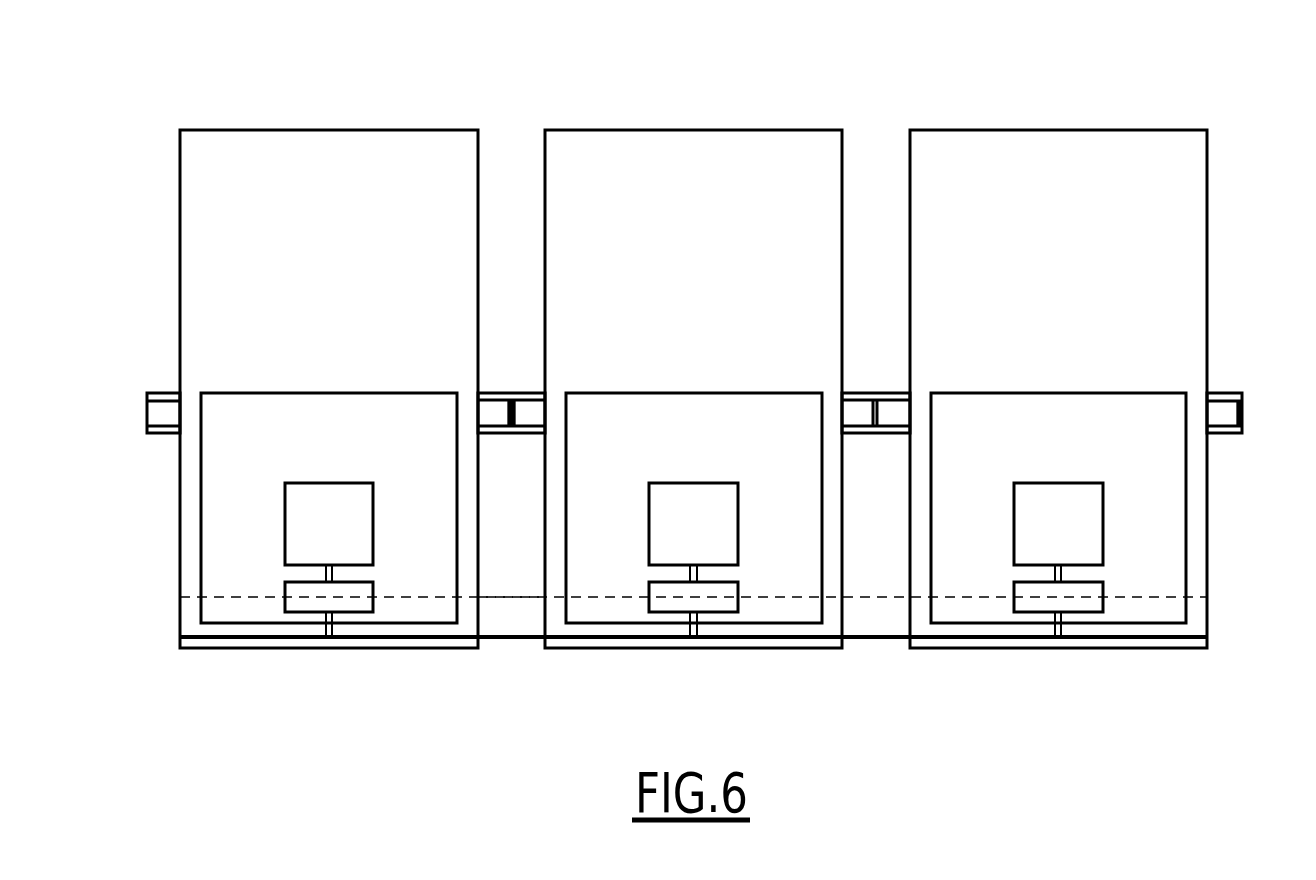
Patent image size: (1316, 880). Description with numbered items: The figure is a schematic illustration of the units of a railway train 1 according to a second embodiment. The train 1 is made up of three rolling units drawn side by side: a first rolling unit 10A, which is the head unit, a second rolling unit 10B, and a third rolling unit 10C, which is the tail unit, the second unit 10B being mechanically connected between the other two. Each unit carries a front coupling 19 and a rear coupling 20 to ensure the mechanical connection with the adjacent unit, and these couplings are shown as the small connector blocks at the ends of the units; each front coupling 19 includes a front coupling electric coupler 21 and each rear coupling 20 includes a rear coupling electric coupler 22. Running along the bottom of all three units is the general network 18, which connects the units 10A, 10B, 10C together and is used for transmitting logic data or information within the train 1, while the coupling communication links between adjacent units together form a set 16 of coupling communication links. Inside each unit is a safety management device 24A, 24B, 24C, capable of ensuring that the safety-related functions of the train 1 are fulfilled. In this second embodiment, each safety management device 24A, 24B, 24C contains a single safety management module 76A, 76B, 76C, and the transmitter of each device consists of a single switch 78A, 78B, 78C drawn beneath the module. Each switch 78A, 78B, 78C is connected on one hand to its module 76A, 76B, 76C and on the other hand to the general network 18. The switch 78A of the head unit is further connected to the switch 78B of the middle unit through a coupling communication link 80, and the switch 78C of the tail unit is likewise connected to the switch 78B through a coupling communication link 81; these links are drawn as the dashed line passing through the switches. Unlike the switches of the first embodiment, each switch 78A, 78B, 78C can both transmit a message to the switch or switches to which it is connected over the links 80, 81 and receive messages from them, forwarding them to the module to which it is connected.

The railway train 1 is at (178, 98).
The first rolling unit 10A is at (1012, 130).
The second rolling unit 10B is at (622, 130).
The third rolling unit 10C is at (377, 130).
The set of coupling communication links 16 is at (528, 606).
The general network 18 is at (510, 648).
The front coupling 19 is at (1242, 401).
The rear coupling 20 is at (147, 430).
The front coupling electric coupler 21 is at (492, 413).
The rear coupling electric coupler 22 is at (158, 412).
The safety management device 24A is at (1148, 393).
The safety management device 24B is at (618, 393).
The safety management device 24C is at (250, 393).
The safety management module 76A is at (1062, 483).
The safety management module 76B is at (700, 483).
The safety management module 76C is at (332, 483).
The switch 78A is at (1088, 613).
The switch 78B is at (720, 613).
The switch 78C is at (357, 613).
The coupling communication link 80 is at (882, 595).
The coupling communication link 81 is at (517, 595).